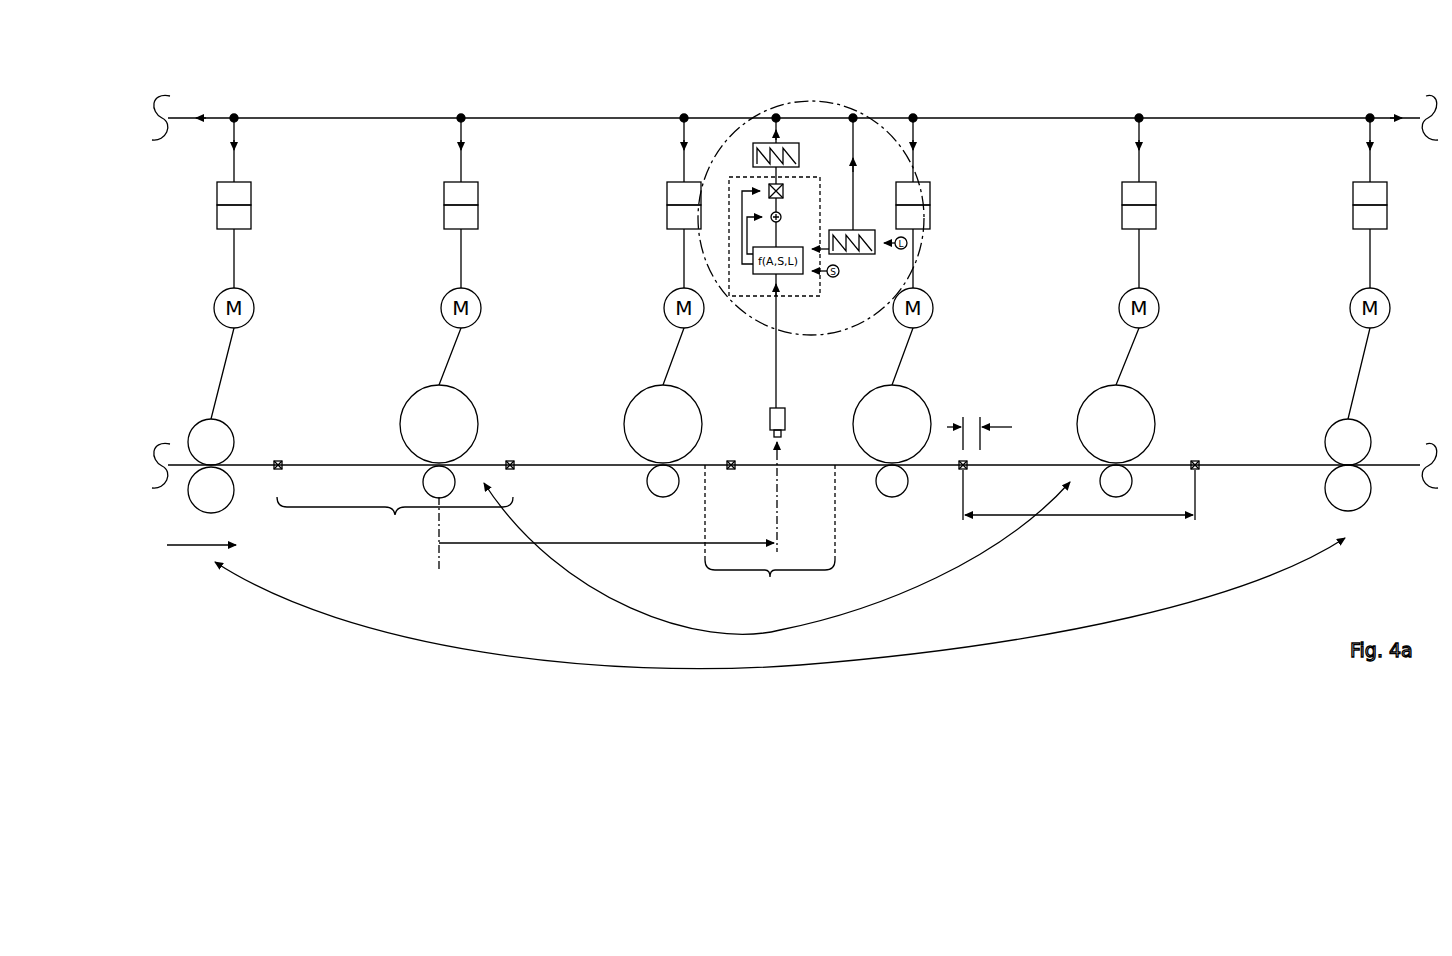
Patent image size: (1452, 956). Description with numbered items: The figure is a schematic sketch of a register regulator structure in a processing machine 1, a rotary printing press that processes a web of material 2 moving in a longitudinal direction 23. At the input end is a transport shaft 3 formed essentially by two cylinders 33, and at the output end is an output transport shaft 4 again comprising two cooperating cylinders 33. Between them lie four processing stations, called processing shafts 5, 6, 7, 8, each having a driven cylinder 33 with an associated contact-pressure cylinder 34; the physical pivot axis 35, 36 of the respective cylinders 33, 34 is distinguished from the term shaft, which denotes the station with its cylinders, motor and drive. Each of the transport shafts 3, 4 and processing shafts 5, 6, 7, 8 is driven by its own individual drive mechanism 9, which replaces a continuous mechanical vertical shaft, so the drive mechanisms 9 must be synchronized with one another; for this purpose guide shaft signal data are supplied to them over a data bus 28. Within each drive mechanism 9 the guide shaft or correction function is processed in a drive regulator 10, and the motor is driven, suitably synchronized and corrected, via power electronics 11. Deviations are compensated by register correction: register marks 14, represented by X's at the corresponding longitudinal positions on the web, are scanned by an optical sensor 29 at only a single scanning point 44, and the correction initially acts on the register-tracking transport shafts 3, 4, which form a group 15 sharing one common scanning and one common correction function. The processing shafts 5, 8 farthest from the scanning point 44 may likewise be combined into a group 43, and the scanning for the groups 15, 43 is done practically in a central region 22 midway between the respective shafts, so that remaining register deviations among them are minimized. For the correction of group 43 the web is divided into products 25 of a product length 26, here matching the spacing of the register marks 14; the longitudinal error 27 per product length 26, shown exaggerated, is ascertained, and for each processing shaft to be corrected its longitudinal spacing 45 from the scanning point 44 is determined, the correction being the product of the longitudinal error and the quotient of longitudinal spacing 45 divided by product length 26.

The processing machine 1 is at (1021, 552).
The web of material 2 is at (549, 465).
The transport shaft 3 is at (237, 449).
The output transport shaft 4 is at (1365, 478).
The processing shaft 5 is at (445, 427).
The processing shaft 6 is at (690, 381).
The processing shaft 7 is at (917, 379).
The processing shaft 8 is at (1145, 379).
The drive mechanism 9 is at (773, 173).
The drive regulator 10 is at (802, 193).
The power electronics 11 is at (1353, 197).
The register marks 14 is at (960, 470).
The group 15 is at (780, 603).
The central region 22 is at (770, 530).
The longitudinal direction 23 is at (201, 534).
The products 25 is at (395, 520).
The product length 26 is at (1079, 495).
The longitudinal error 27 is at (980, 427).
The data bus 28 is at (403, 118).
The sensor 29 is at (787, 412).
The cylinders 33 is at (226, 487).
The contact-pressure cylinders 34 is at (452, 478).
The pivot axis 35 is at (436, 420).
The pivot axis 36 is at (430, 472).
The group 43 is at (777, 558).
The scanning point 44 is at (782, 461).
The longitudinal spacing 45 is at (606, 534).